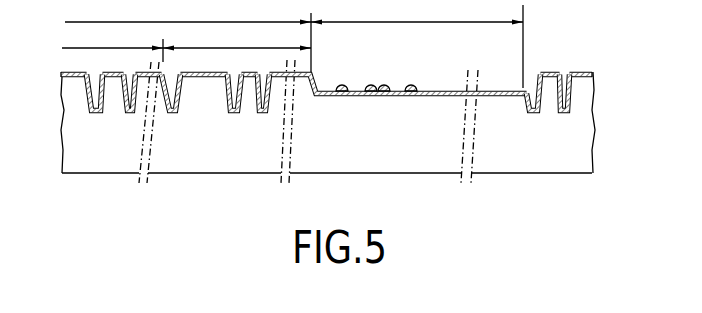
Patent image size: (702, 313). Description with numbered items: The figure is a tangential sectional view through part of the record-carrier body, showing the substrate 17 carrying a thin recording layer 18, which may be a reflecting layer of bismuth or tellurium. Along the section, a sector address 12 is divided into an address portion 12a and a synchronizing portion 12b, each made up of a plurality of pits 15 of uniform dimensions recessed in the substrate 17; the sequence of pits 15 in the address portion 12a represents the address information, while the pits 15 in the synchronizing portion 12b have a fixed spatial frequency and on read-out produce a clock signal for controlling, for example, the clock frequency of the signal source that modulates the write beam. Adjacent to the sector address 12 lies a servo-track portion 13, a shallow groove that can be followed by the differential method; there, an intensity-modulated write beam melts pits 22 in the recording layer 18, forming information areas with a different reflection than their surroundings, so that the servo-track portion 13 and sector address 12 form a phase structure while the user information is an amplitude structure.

The sector address 12 is at (188, 36).
The address portion 12a is at (237, 37).
The synchronizing portion 12b is at (112, 43).
The servo-track portion 13 is at (417, 44).
The pit 15 is at (128, 115).
The substrate 17 is at (257, 156).
The recording layer 18 is at (74, 72).
The pit 22 is at (400, 93).